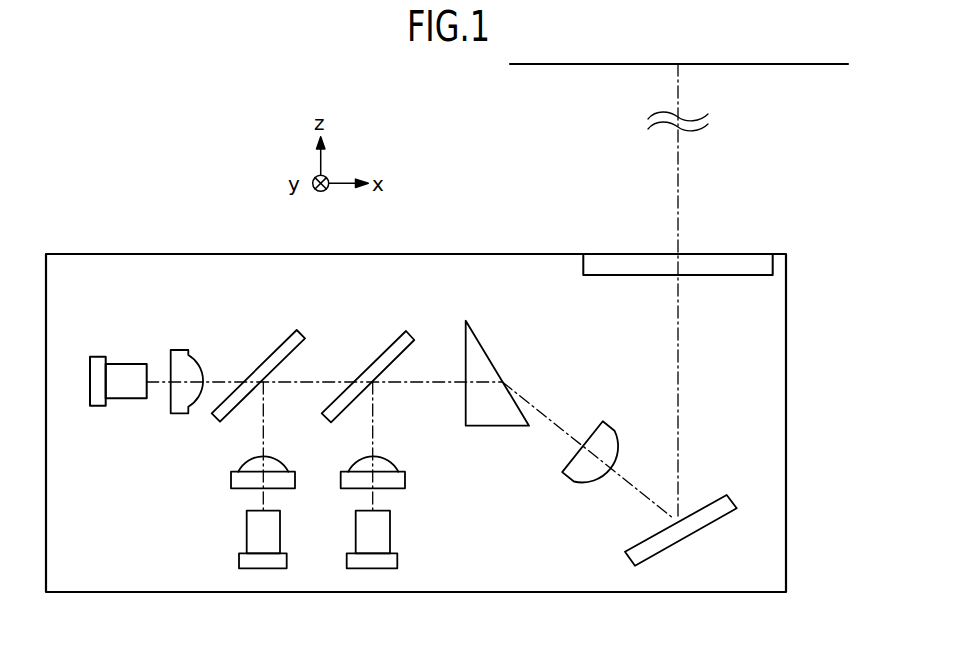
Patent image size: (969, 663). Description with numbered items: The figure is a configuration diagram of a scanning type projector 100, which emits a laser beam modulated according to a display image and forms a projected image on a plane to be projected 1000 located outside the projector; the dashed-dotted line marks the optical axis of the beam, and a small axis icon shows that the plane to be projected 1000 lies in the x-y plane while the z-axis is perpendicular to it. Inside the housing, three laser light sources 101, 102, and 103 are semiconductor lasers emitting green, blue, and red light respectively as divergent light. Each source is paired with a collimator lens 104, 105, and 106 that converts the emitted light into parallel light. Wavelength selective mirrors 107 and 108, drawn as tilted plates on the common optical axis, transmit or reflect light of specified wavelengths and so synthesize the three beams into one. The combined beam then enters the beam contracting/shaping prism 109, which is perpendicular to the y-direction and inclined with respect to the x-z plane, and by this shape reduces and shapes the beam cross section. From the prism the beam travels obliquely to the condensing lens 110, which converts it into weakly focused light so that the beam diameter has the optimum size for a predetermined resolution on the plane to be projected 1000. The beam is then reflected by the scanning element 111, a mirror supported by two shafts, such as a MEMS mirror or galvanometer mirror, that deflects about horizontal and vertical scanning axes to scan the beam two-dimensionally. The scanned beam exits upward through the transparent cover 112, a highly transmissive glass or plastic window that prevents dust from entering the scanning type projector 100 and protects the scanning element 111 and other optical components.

The scanning type projector 100 is at (778, 555).
The plane to be projected 1000 is at (555, 66).
The laser light source 101 is at (122, 392).
The laser light source 102 is at (250, 528).
The laser light source 103 is at (383, 530).
The collimator lens 104 is at (182, 402).
The collimator lens 105 is at (243, 479).
The collimator lens 106 is at (400, 479).
The mirror 107 is at (274, 347).
The mirror 108 is at (382, 350).
The beam contracting/shaping prism 109 is at (478, 352).
The condensing lens 110 is at (585, 472).
The scanning element 111 is at (635, 552).
The transparent cover 112 is at (748, 265).